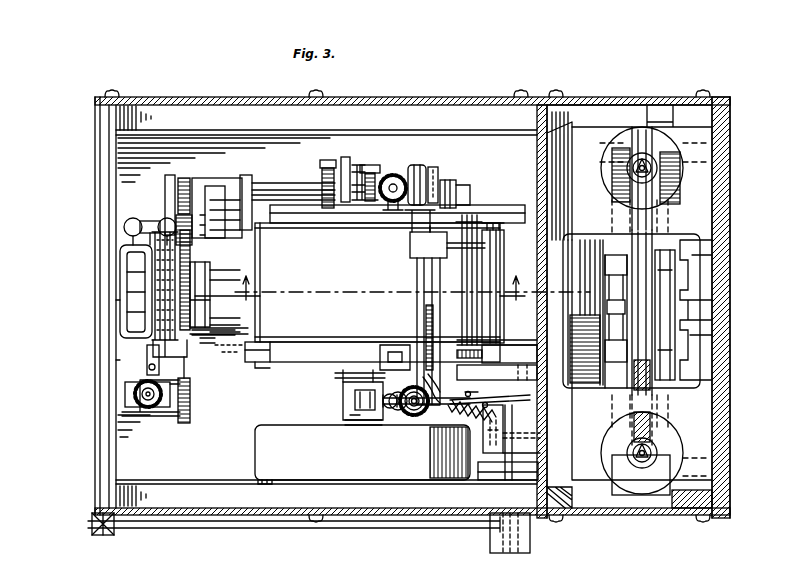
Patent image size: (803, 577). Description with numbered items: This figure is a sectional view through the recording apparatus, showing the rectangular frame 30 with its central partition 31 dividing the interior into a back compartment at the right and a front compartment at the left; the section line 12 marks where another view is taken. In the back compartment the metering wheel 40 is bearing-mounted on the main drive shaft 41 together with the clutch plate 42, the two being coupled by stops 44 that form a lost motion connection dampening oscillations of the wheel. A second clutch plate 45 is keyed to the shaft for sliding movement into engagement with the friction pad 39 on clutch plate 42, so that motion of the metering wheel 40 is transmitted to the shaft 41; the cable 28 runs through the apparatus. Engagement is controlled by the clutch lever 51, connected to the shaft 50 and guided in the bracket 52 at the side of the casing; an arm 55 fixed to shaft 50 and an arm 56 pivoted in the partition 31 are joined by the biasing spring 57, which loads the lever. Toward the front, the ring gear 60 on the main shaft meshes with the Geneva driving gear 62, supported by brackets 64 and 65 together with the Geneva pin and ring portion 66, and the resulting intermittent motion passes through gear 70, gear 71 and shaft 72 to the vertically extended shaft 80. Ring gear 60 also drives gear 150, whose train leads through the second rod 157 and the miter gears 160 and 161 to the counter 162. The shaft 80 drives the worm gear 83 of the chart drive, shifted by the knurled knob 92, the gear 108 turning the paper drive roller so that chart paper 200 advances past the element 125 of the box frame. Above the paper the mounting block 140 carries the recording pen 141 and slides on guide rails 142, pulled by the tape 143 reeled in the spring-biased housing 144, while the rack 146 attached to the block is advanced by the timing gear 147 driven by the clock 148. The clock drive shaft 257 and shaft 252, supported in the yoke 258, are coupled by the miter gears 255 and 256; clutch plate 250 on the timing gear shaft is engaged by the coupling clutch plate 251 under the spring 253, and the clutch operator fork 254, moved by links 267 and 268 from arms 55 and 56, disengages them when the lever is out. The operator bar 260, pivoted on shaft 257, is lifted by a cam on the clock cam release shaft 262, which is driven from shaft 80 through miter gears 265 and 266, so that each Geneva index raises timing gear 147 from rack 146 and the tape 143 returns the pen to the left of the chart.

The section line 12 is at (360, 279).
The cable 28 is at (640, 460).
The rectangular frame 30 is at (728, 398).
The central partition 31 is at (548, 155).
The friction pad 39 is at (579, 231).
The metering wheel 40 is at (681, 180).
The main drive shaft 41 is at (234, 323).
The clutch plate 42 is at (577, 382).
The stops 44 is at (611, 244).
The second clutch plate 45 is at (567, 236).
The shaft 50 is at (503, 472).
The clutch lever 51 is at (411, 527).
The guide bracket 52 is at (103, 536).
The arm 55 is at (482, 395).
The arm 56 is at (502, 450).
The biasing spring 57 is at (449, 412).
The ring gear 60 is at (180, 285).
The Geneva driving gear 62 is at (189, 178).
The bracket 64 is at (170, 175).
The bracket 65 is at (253, 176).
The Geneva pin and ring portion 66 is at (214, 179).
The gear 70 is at (322, 182).
The gear 71 is at (323, 160).
The shaft 72 is at (285, 176).
The vertically extended shaft 80 is at (385, 174).
The worm gear 83 is at (345, 157).
The knurled knob 92 is at (364, 165).
The gear 108 is at (480, 361).
The guide 125 is at (512, 264).
The mounting block 140 is at (410, 240).
The recording pen 141 is at (476, 225).
The guide rails 142 is at (417, 277).
The tape 143 is at (430, 215).
The housing 144 is at (436, 167).
The rack 146 is at (424, 314).
The timing gear 147 is at (415, 415).
The clock 148 is at (273, 432).
The gear 150 is at (191, 391).
The second rod 157 is at (144, 406).
The miter gear 160 is at (151, 406).
The miter gear 161 is at (140, 396).
The counter 162 is at (120, 292).
The chart paper 200 is at (318, 275).
The clutch plate 250 is at (408, 445).
The coupling clutch plate 251 is at (408, 457).
The shaft 252 is at (396, 410).
The spring 253 is at (387, 407).
The clutch operator fork 254 is at (406, 406).
The miter gear 255 is at (355, 404).
The miter gear 256 is at (350, 420).
The clock drive shaft 257 is at (343, 396).
The yoke 258 is at (342, 376).
The operator bar 260 is at (375, 346).
The clock cam release shaft 262 is at (398, 256).
The miter gear 265 is at (384, 203).
The miter gear 266 is at (411, 165).
The link 267 is at (431, 402).
The link 268 is at (497, 373).